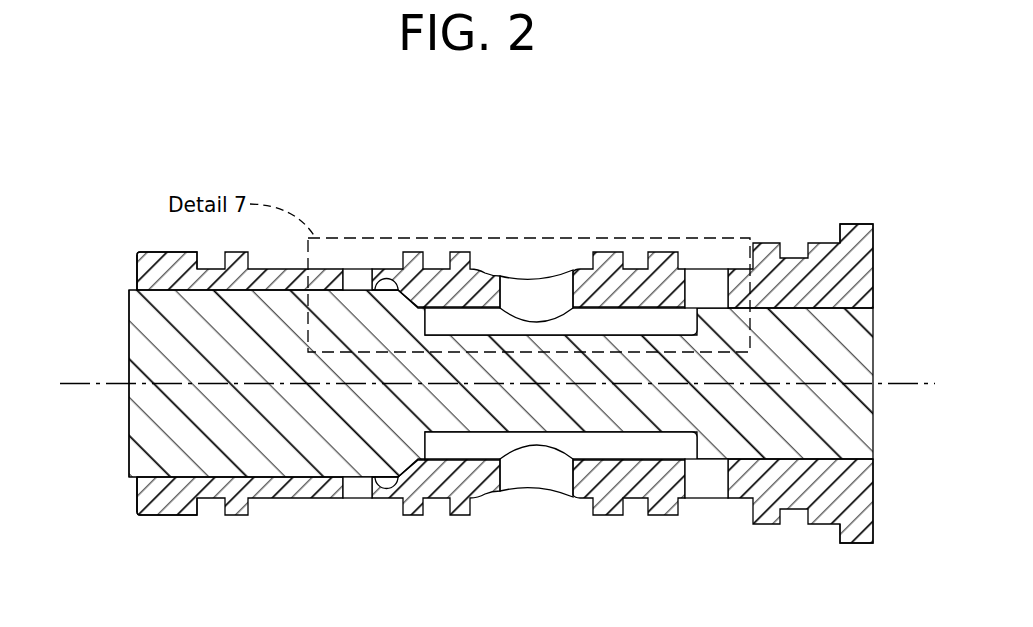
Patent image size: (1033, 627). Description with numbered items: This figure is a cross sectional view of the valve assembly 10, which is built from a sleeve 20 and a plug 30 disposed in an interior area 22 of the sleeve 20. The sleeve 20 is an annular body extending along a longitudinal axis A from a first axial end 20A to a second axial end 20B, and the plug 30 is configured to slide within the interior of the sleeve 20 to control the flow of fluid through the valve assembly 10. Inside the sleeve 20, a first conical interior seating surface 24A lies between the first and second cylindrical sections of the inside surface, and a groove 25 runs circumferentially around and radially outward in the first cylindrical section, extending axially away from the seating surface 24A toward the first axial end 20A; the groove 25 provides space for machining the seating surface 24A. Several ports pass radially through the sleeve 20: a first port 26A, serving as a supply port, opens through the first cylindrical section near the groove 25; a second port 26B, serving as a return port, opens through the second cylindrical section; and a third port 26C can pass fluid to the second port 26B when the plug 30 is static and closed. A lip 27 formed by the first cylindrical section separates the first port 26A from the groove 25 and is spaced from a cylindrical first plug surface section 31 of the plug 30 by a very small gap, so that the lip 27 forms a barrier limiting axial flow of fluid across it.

The valve assembly 10 is at (753, 185).
The sleeve 20 is at (155, 265).
The first axial end 20A is at (135, 498).
The second axial end 20B is at (874, 495).
The interior area 22 is at (131, 279).
The first conical interior seating surface 24A is at (424, 308).
The groove 25 is at (390, 287).
The first port 26A is at (362, 277).
The second port 26B is at (703, 283).
The third port 26C is at (543, 290).
The lip 27 is at (380, 277).
The plug 30 is at (128, 345).
The first plug surface section 31 is at (134, 480).
The longitudinal axis A is at (887, 385).